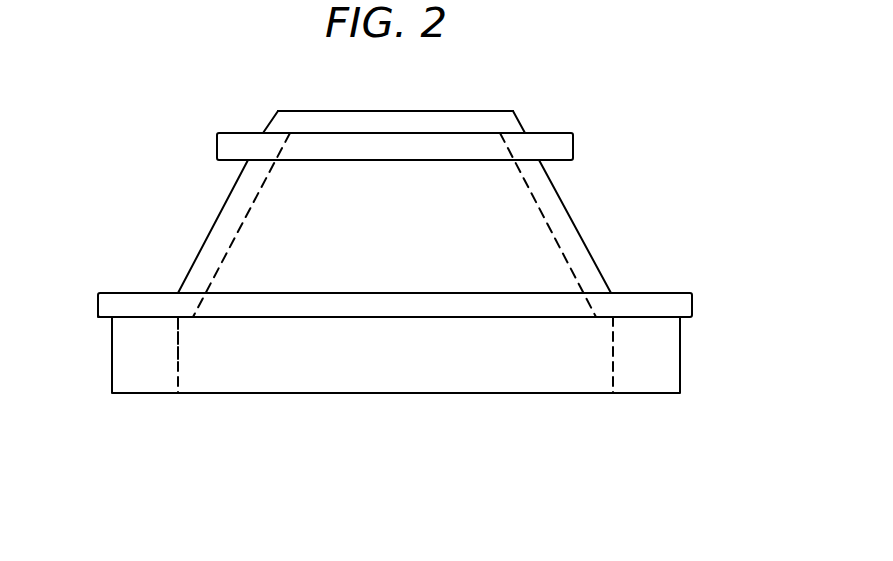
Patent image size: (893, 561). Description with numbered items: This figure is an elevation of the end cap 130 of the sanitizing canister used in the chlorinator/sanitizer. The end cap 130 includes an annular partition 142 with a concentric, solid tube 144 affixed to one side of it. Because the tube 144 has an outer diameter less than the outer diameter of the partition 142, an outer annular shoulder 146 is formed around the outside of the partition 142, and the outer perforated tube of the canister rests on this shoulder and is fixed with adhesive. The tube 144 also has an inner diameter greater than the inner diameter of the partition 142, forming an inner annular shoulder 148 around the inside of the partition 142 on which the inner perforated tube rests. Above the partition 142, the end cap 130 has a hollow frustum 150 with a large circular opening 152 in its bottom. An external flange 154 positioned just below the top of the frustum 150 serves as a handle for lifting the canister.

The end cap 130 is at (188, 190).
The annular partition 142 is at (678, 303).
The solid tube 144 is at (648, 394).
The outer annular shoulder 146 is at (100, 319).
The inner annular shoulder 148 is at (183, 318).
The hollow frustum 150 is at (568, 205).
The circular opening 152 is at (502, 318).
The external flange 154 is at (565, 152).